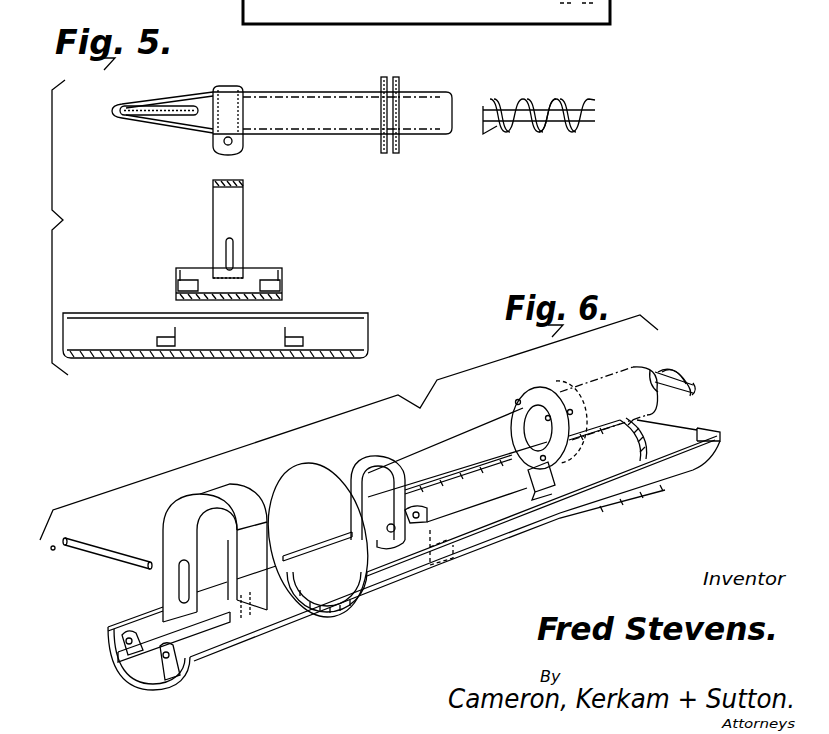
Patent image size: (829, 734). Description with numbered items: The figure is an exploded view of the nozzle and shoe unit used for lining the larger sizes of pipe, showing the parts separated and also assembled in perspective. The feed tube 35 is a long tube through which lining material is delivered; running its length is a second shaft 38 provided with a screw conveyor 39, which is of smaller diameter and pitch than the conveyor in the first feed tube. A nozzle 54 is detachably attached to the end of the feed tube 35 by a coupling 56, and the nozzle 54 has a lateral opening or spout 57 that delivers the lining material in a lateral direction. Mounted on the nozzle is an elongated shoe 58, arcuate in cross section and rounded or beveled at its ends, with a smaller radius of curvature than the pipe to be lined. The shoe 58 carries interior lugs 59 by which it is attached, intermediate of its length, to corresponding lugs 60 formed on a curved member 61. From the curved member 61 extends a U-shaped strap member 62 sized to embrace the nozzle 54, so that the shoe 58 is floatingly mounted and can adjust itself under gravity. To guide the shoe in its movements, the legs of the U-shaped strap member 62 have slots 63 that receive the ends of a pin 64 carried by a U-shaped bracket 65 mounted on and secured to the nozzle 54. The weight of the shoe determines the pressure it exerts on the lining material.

In FIG. 5, the feed tube 35 is at (433, 98).
In FIG. 6, the feed tube 35 is at (603, 390).
In FIG. 5, the second shaft 38 is at (525, 110).
In FIG. 6, the second shaft 38 is at (687, 370).
In FIG. 5, the screw conveyor 39 is at (555, 132).
In FIG. 6, the screw conveyor 39 is at (663, 368).
In FIG. 5, the nozzle 54 is at (197, 98).
In FIG. 6, the nozzle 54 is at (320, 487).
In FIG. 5, the coupling 56 is at (383, 152).
In FIG. 6, the coupling 56 is at (530, 390).
In FIG. 5, the lateral opening or spout 57 is at (130, 117).
In FIG. 6, the lateral opening or spout 57 is at (313, 537).
In FIG. 5, the elongated shoe 58 is at (232, 343).
In FIG. 6, the elongated shoe 58 is at (653, 487).
In FIG. 5, the interior lugs 59 is at (288, 333).
In FIG. 6, the interior lugs 59 is at (427, 519).
In FIG. 5, the lugs 60 is at (183, 263).
In FIG. 6, the lugs 60 is at (122, 648).
In FIG. 5, the curved member 61 is at (207, 290).
In FIG. 6, the curved member 61 is at (222, 657).
In FIG. 5, the U-shaped strap member 62 is at (237, 202).
In FIG. 6, the U-shaped strap member 62 is at (227, 490).
In FIG. 5, the slots 63 is at (235, 252).
In FIG. 6, the slots 63 is at (173, 583).
In FIG. 6, the pin 64 is at (105, 542).
In FIG. 5, the U-shaped bracket 65 is at (232, 92).
In FIG. 6, the U-shaped bracket 65 is at (382, 465).